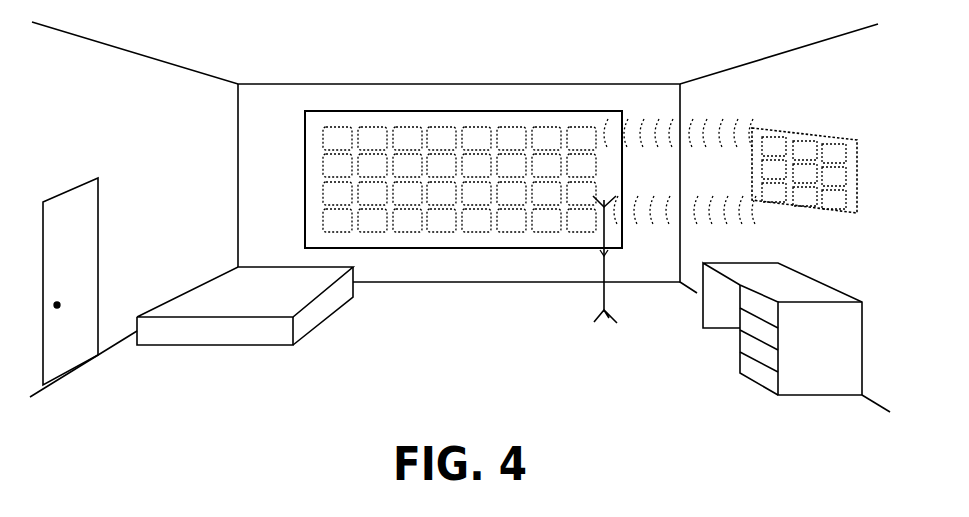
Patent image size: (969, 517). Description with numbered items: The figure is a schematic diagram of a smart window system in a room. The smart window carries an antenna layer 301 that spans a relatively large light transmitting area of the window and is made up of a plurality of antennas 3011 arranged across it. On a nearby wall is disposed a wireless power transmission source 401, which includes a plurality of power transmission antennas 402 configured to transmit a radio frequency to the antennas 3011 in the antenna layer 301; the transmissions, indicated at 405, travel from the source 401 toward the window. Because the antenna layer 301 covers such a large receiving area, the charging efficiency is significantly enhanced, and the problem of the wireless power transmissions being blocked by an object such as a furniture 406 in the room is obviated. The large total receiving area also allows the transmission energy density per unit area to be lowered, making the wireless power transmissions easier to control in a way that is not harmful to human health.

The antenna layer 301 is at (327, 103).
The antennas 3011 is at (583, 119).
The sound waves 405 is at (692, 118).
The wireless power transmission source 401 is at (841, 142).
The power transmission antennas 402 is at (765, 135).
The furniture 406 is at (597, 301).